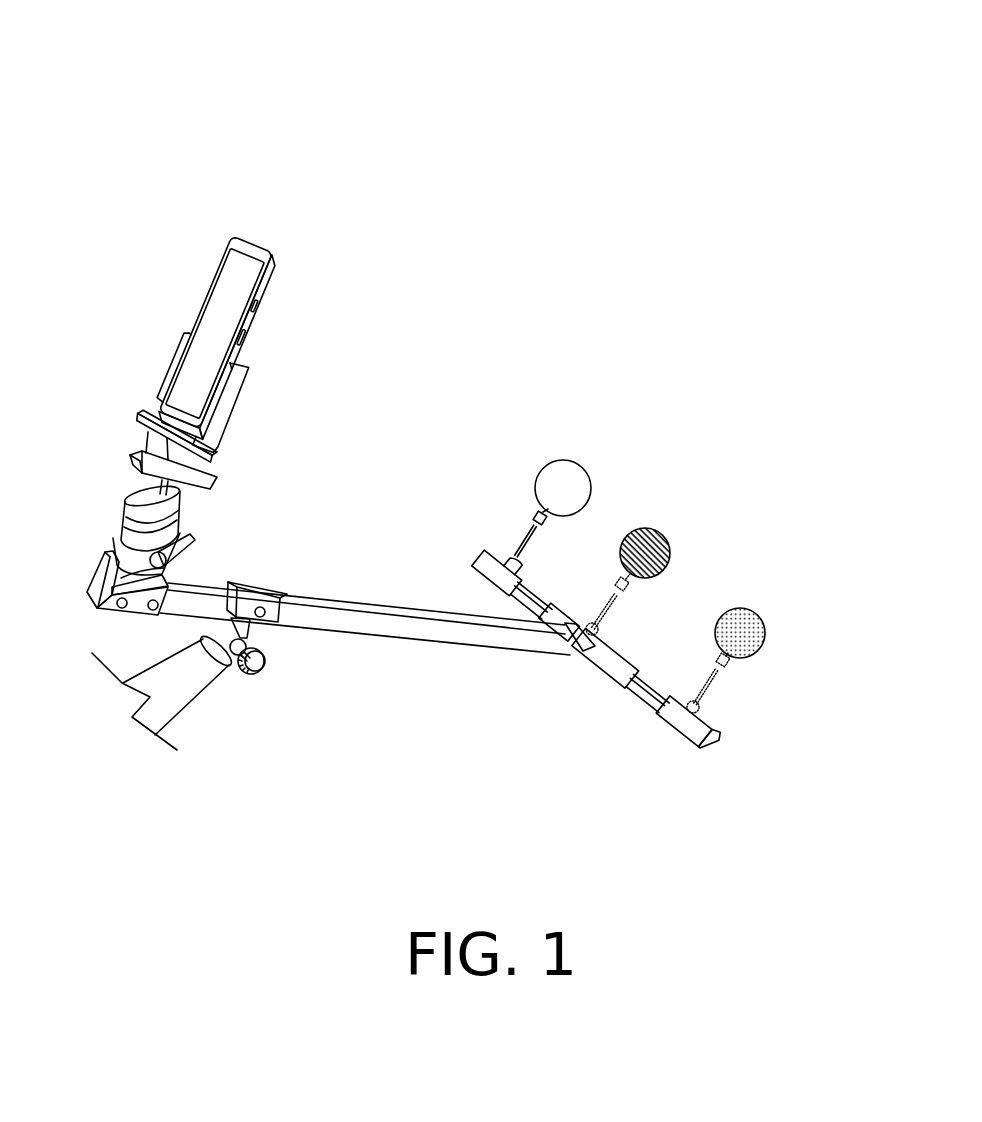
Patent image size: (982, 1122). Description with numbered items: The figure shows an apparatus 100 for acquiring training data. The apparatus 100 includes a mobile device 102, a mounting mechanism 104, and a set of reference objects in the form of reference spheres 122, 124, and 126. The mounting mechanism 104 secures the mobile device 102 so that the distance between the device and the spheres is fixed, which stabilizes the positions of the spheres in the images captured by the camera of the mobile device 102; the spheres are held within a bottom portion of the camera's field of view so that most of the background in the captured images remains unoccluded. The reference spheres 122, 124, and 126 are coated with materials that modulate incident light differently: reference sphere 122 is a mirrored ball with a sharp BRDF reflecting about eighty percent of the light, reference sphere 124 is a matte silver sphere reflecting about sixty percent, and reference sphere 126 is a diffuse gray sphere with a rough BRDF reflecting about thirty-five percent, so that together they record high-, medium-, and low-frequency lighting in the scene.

The apparatus 100 is at (96, 85).
The mobile device 102 is at (278, 267).
The mounting mechanism 104 is at (243, 538).
The reference sphere 122 is at (575, 462).
The reference sphere 124 is at (765, 630).
The reference sphere 126 is at (666, 539).